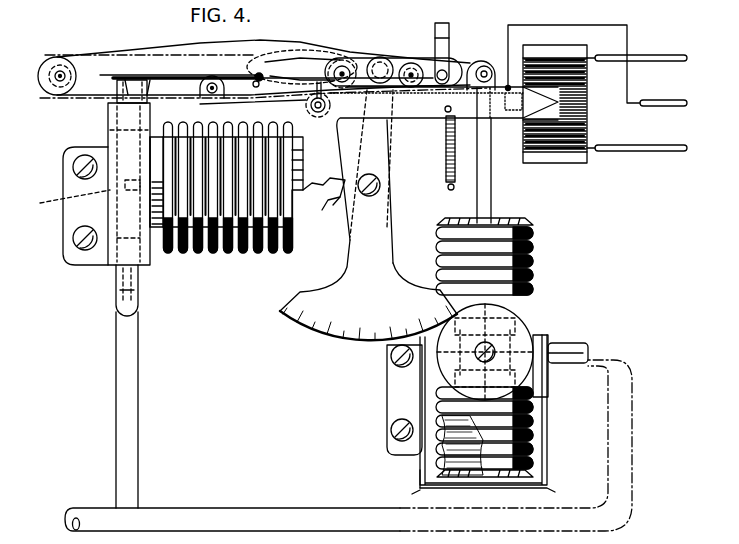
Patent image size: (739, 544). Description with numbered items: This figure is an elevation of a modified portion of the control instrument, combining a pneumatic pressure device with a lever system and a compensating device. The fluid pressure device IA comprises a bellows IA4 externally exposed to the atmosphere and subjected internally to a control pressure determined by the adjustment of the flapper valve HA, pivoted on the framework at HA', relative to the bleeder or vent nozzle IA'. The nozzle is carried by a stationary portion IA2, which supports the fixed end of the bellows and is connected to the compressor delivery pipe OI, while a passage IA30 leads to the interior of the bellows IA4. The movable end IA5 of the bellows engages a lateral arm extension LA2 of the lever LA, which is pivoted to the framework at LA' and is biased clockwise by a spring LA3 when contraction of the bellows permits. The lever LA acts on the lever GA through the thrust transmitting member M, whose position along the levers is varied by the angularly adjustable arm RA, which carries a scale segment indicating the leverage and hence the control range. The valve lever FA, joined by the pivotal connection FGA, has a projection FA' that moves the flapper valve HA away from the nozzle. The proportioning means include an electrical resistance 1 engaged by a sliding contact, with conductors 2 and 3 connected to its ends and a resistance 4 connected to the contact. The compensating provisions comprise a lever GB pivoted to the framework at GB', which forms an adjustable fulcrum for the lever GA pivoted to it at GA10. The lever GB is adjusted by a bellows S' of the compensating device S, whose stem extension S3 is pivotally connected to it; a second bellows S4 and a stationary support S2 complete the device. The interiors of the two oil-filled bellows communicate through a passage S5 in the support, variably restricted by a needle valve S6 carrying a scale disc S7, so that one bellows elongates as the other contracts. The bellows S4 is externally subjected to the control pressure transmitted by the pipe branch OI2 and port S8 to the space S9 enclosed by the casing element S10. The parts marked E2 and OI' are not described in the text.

The lever GA is at (129, 52).
The pivot GA10 is at (60, 60).
The flapper valve HA is at (187, 59).
The flapper valve pivot HA' is at (233, 97).
The thrust transmitting member M is at (259, 72).
The projection of valve lever FA' is at (302, 52).
The lever pivot LA' is at (349, 129).
The pivotal connection FGA is at (348, 66).
The lever pivot GB' is at (395, 58).
The valve lever FA is at (437, 44).
The pin E2 is at (447, 38).
The compensating lever GB is at (481, 65).
The bleeder or vent nozzle IA' is at (106, 104).
The fluid pressure device IA is at (80, 184).
The stationary portion IA2 is at (70, 222).
The passage IA30 is at (76, 197).
The bellows IA4 is at (242, 258).
The movable end of bellows IA5 is at (313, 210).
The compressor delivery pipe OI is at (144, 386).
The rod joint OI' is at (103, 280).
The pressure supply pipe branch OI2 is at (585, 362).
The lever LA is at (444, 175).
The lateral arm extension LA2 is at (334, 190).
The spring LA3 is at (445, 165).
The angularly adjustable arm RA is at (386, 249).
The electrical resistance 1 is at (577, 148).
The conductor 2 is at (662, 152).
The conductor 3 is at (650, 55).
The resistance conductor 4 is at (557, 26).
The compensating device S is at (606, 294).
The bellows S' is at (498, 256).
The stationary support S2 is at (495, 350).
The stem extension S3 is at (496, 204).
The second bellows S4 is at (533, 446).
The passage S5 is at (527, 393).
The needle valve S6 is at (510, 330).
The disc S7 is at (440, 360).
The port S8 is at (548, 346).
The space S9 is at (425, 466).
The casing element S10 is at (550, 486).